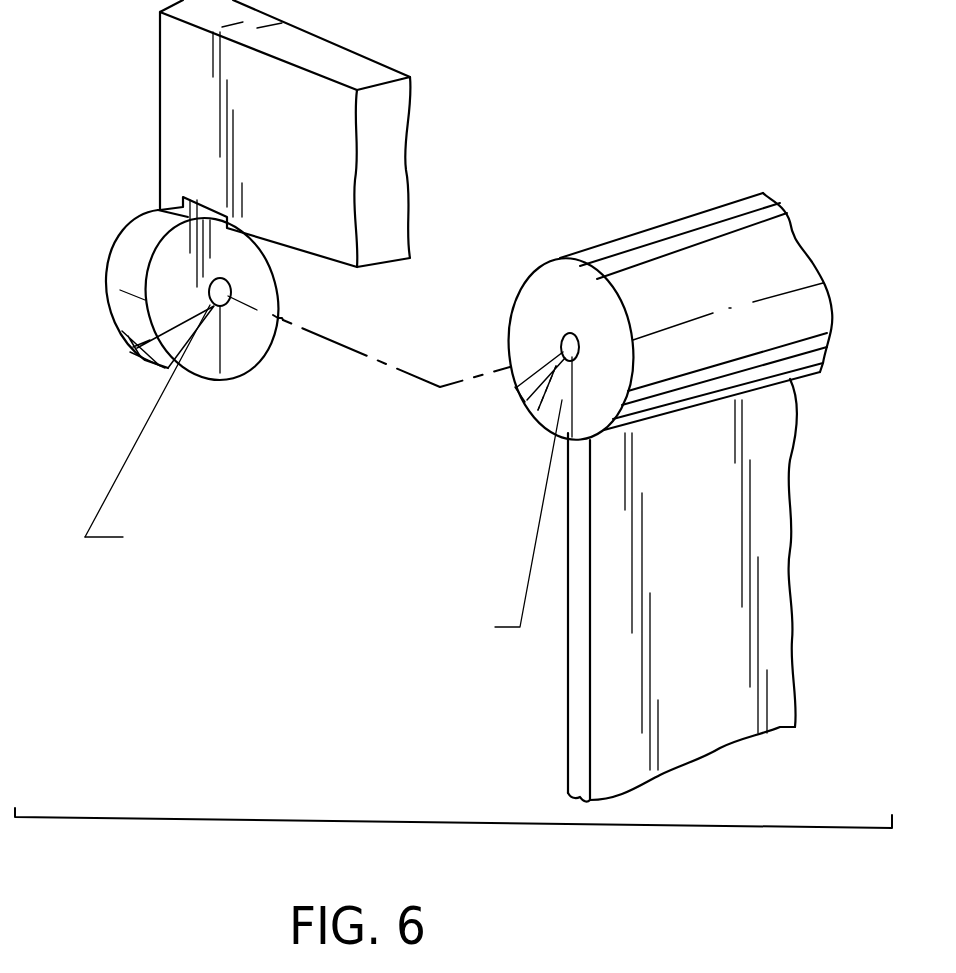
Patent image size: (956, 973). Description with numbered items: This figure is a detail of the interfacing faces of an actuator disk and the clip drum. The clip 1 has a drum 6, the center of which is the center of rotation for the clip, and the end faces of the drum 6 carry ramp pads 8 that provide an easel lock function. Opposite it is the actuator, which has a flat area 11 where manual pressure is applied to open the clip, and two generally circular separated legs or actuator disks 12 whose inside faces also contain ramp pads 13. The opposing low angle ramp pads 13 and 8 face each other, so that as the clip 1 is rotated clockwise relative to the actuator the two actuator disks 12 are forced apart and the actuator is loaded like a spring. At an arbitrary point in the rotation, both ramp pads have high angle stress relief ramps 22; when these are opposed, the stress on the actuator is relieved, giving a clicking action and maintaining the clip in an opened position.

The clip 1 is at (538, 303).
The drum 6 is at (652, 483).
The ramp pads 8 is at (560, 403).
The flat area 11 is at (178, 90).
The actuator disks 12 is at (138, 268).
The ramp pads 13 is at (205, 363).
The high angle stress relief ramps 22 is at (183, 337).